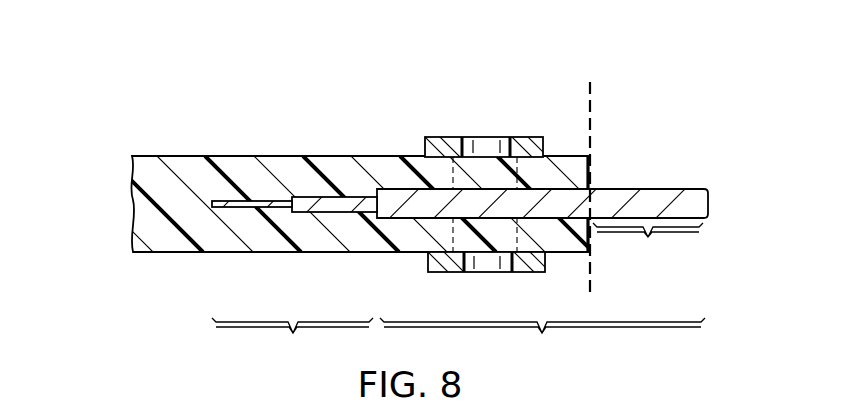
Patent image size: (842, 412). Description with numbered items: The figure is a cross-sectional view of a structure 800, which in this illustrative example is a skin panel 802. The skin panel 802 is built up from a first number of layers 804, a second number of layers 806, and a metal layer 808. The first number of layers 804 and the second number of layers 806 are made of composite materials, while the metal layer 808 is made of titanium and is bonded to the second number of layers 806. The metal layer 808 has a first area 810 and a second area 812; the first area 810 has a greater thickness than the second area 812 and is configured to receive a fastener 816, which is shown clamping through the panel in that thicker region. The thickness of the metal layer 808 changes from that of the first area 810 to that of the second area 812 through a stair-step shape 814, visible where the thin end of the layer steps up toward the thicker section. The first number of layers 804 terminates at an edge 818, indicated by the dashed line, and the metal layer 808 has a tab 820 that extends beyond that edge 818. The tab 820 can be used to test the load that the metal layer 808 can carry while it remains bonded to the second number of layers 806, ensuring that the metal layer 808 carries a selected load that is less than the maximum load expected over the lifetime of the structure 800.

The structure 800 is at (382, 196).
The skin panel 802 is at (178, 156).
The first number of layers 804 is at (432, 205).
The second number of layers 806 is at (295, 214).
The metal layer 808 is at (661, 199).
The first area 810 is at (542, 340).
The second area 812 is at (292, 340).
The stair-step shape 814 is at (238, 209).
The fastener 816 is at (440, 135).
The edge 818 is at (588, 112).
The tab 820 is at (648, 246).